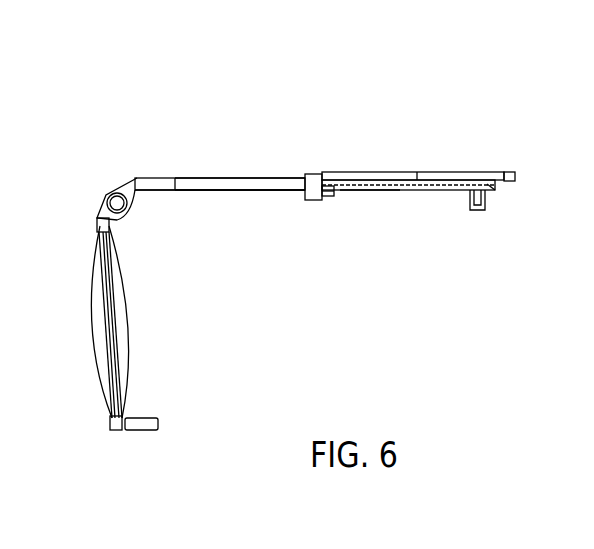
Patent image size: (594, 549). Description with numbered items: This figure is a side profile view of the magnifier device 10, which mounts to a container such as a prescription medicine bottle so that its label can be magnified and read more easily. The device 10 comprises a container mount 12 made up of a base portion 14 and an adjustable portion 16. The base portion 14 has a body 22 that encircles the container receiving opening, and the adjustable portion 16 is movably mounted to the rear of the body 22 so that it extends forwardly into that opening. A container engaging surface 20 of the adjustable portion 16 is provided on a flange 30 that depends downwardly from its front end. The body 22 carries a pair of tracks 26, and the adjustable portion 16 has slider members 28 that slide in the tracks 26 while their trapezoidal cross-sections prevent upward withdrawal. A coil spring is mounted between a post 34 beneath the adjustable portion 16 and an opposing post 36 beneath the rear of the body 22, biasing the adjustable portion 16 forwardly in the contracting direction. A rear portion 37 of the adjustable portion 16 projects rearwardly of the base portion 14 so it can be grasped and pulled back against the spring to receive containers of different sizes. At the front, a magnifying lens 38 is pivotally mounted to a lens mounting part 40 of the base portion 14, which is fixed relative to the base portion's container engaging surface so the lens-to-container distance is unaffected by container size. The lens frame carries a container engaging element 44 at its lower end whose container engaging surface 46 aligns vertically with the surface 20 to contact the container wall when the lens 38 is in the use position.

The magnifier device 10 is at (491, 99).
The container mount 12 is at (222, 201).
The base portion 14 is at (190, 186).
The adjustable portion 16 is at (378, 176).
The container engaging surface 20 is at (313, 201).
The body 22 is at (243, 187).
The tracks 26 is at (420, 191).
The slider members 28 is at (366, 191).
The flange 30 is at (328, 197).
The post 34 is at (324, 192).
The opposing post 36 is at (473, 211).
The rear portion 37 is at (510, 172).
The magnifying lens 38 is at (92, 329).
The lens mounting part 40 is at (128, 183).
The container engaging element 44 is at (143, 419).
The container engaging surface 46 is at (160, 421).